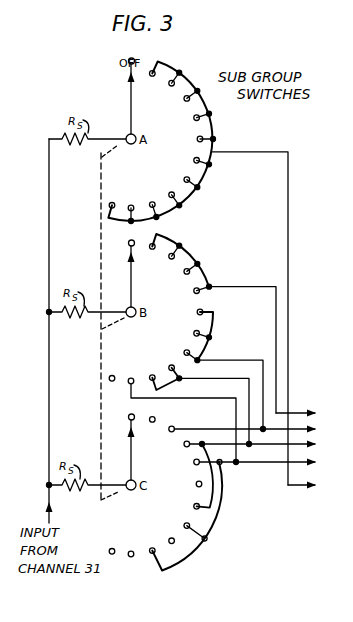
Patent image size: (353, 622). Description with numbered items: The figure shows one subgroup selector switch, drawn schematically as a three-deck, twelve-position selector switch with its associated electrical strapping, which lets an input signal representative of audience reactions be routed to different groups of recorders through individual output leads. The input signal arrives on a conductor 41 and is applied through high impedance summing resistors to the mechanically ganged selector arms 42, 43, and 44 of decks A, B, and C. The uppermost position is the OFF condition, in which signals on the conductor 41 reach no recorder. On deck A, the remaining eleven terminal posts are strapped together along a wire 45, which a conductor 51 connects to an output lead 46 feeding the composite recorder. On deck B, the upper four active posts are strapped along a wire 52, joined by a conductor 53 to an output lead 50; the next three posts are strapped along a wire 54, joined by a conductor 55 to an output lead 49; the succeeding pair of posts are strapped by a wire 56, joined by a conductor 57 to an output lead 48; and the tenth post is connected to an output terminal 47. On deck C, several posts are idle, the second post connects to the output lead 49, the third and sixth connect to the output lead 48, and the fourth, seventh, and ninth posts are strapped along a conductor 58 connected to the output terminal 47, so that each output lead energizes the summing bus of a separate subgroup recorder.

The conductor 41 is at (49, 499).
The selector arm 42 is at (131, 107).
The selector arm 43 is at (131, 287).
The selector arm 44 is at (131, 460).
The wire 45 is at (213, 106).
The output lead 46 is at (309, 485).
The output terminal 47 is at (309, 462).
The output lead 48 is at (309, 444).
The output lead 49 is at (309, 429).
The output lead 50 is at (309, 413).
The conductor 51 is at (262, 152).
The wire 52 is at (189, 257).
The conductor 53 is at (256, 286).
The wire 54 is at (211, 328).
The conductor 55 is at (256, 360).
The wire 56 is at (165, 388).
The conductor 57 is at (237, 378).
The conductor 58 is at (208, 533).